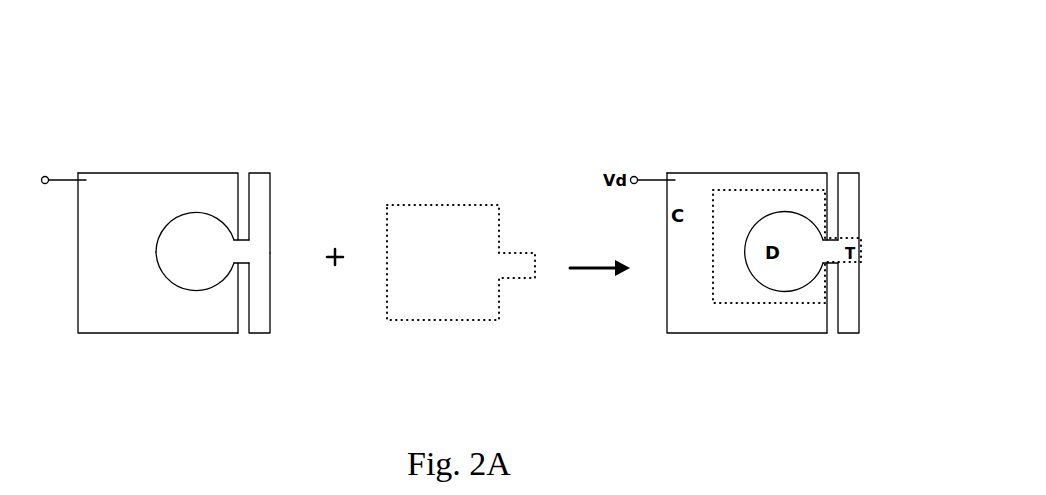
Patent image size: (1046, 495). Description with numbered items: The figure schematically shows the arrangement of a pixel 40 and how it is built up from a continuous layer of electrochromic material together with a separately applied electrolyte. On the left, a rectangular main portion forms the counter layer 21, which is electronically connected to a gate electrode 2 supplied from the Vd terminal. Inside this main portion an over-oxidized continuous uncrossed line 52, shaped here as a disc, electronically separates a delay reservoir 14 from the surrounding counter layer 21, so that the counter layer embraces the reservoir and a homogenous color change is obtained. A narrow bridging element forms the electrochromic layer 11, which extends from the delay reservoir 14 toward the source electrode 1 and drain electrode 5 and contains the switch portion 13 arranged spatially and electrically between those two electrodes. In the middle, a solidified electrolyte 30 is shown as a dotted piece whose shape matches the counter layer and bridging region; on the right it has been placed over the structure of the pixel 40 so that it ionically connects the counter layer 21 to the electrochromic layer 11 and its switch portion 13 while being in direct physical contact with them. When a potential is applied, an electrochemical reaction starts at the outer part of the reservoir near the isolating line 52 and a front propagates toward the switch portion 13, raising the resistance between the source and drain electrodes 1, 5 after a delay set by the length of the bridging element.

The source electrode 1 is at (258, 178).
The gate electrode 2 is at (88, 181).
The drain electrode 5 is at (258, 320).
The electrochromic layer 11 is at (243, 256).
The switch portion 13 is at (252, 253).
The delay reservoir 14 is at (196, 277).
The counter layer 21 is at (117, 292).
The solidified electrolyte 30 is at (446, 176).
The assembly 40 is at (124, 136).
The over-oxidized continuous uncrossed line 52 is at (185, 212).